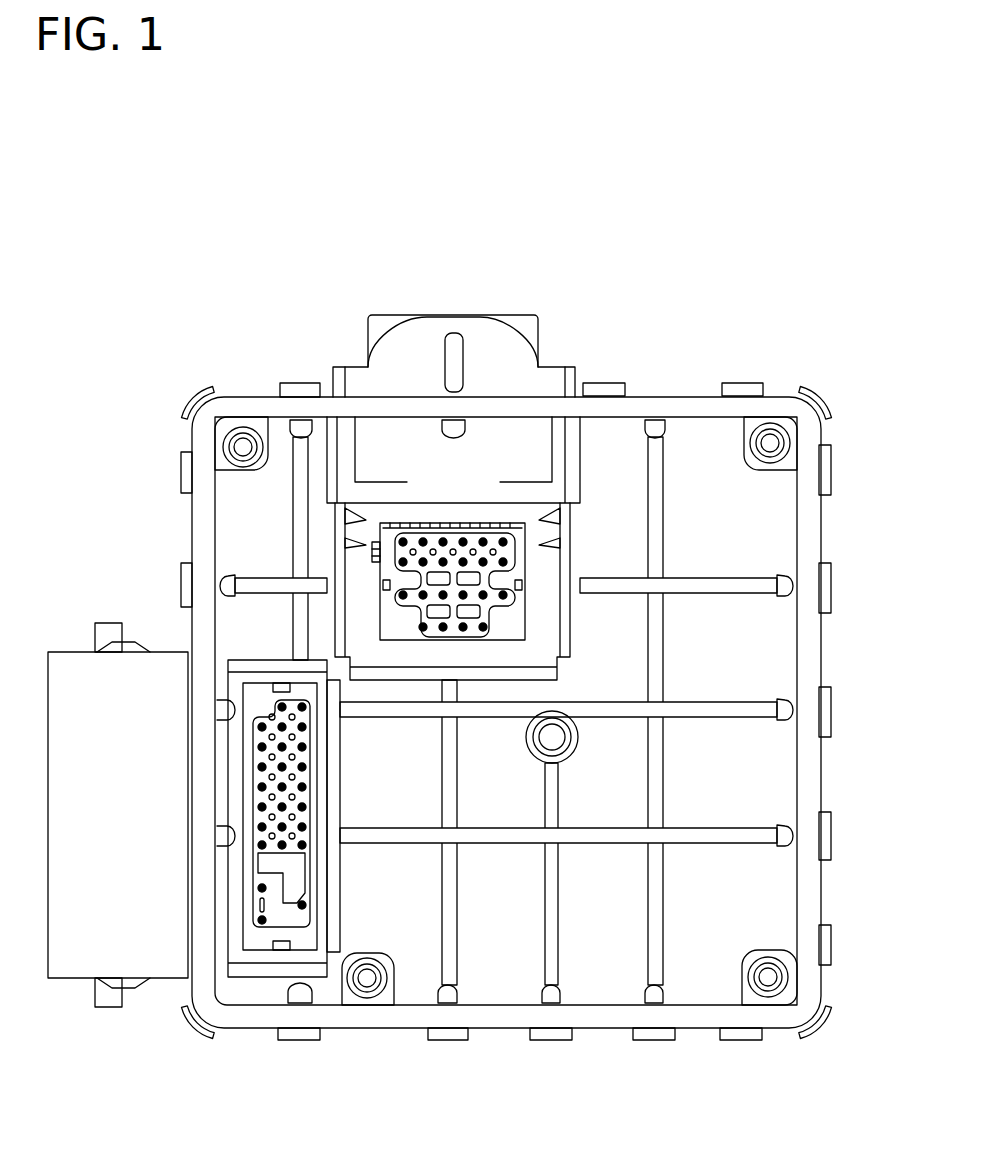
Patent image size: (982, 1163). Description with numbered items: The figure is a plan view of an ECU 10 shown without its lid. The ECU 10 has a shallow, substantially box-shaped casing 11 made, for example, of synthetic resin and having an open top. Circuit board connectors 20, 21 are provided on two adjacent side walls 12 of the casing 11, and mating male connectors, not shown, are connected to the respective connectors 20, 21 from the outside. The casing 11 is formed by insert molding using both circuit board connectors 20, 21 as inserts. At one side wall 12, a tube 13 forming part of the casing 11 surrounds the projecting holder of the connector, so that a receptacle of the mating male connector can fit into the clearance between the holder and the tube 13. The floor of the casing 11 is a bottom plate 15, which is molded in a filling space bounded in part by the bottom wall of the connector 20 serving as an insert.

The ECU 10 is at (479, 639).
The casing 11 is at (811, 644).
The side wall 12 is at (420, 402).
The tube 13 is at (518, 372).
The bottom plate 15 is at (607, 958).
The circuit board connector 20 is at (478, 303).
The circuit board connector 21 is at (147, 928).